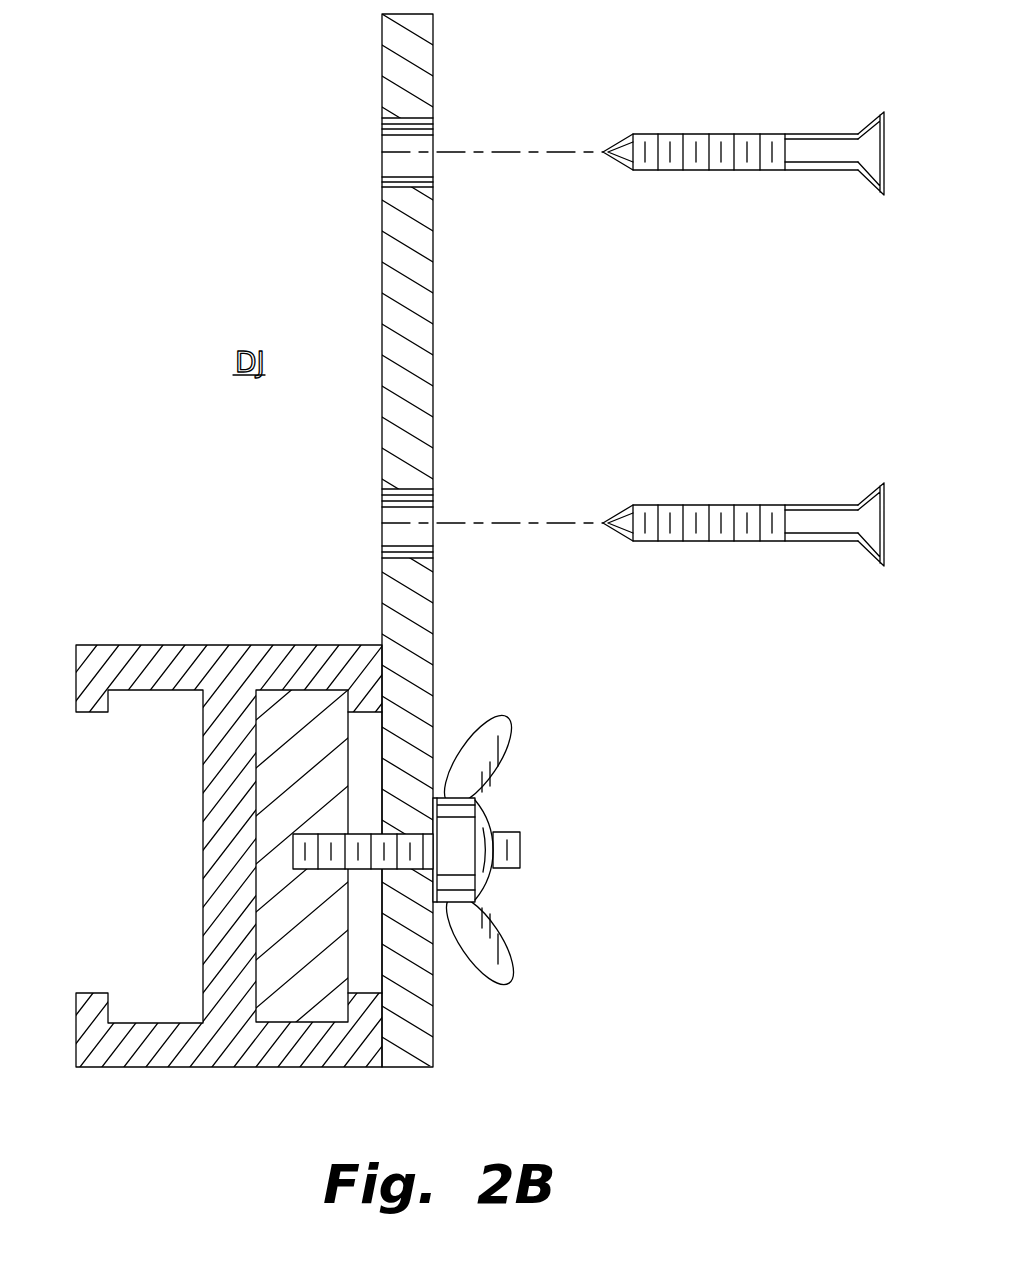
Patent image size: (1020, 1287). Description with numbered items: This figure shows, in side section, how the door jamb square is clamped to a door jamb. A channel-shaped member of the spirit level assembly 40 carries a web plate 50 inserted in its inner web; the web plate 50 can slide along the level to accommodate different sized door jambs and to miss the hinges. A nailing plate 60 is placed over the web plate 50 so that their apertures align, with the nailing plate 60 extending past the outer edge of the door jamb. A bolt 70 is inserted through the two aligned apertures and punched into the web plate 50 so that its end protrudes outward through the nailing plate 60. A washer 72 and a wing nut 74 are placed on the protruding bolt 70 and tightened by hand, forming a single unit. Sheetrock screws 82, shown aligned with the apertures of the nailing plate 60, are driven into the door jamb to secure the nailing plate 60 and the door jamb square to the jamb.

The spirit level assembly 40 is at (203, 856).
The web plate 50 is at (300, 707).
The nailing plate 60 is at (423, 390).
The bolt 70 is at (360, 834).
The washer 72 is at (442, 973).
The wing nut 74 is at (492, 818).
The sheetrock screw 82 is at (803, 172).